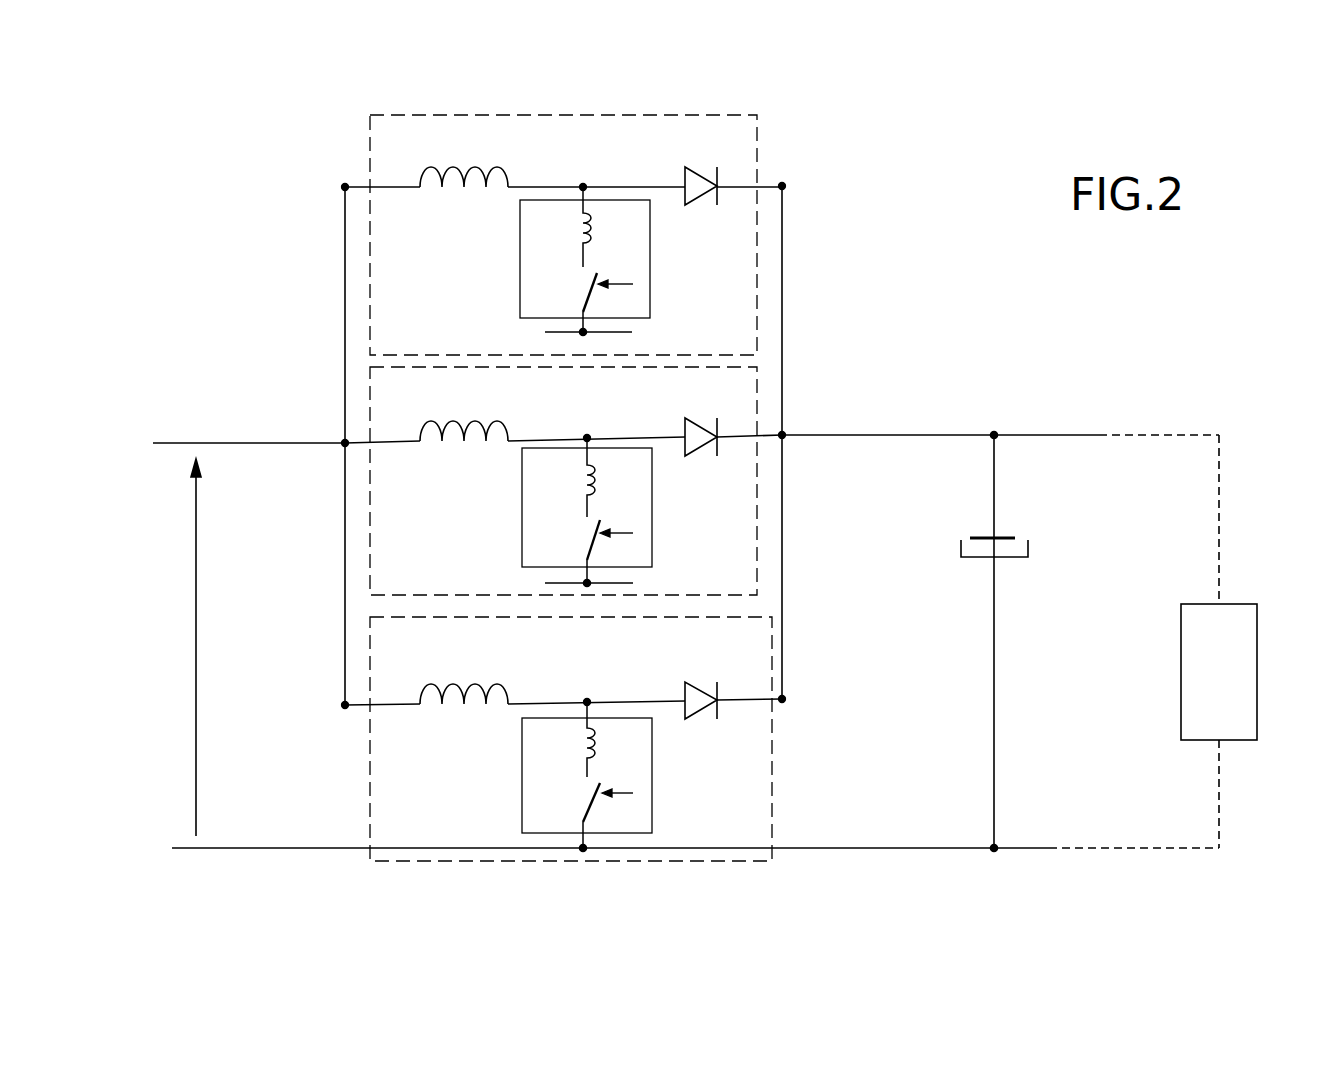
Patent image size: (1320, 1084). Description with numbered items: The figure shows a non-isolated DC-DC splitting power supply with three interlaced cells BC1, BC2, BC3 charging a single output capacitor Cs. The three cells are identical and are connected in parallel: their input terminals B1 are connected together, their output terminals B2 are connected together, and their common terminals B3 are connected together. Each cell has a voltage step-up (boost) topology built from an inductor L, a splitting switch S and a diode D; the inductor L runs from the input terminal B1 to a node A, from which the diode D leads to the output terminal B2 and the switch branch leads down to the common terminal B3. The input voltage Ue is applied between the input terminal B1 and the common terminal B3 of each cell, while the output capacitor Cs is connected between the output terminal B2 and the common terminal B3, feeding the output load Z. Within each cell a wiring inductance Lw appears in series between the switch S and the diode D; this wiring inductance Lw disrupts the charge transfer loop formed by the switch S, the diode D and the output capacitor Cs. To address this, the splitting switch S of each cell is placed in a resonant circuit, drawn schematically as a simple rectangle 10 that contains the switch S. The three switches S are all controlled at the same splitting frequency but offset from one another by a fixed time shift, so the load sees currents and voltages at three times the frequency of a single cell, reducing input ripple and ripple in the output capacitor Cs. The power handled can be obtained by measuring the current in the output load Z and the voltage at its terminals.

The third cell BC3 is at (370, 115).
The second cell BC2 is at (370, 375).
The first cell BC1 is at (370, 860).
The inductor L is at (469, 168).
The input terminal B1 is at (377, 432).
The node A is at (583, 185).
The diode D is at (685, 174).
The output terminal B2 is at (754, 425).
The resonant circuit 10 is at (520, 268).
The wiring inductance Lw is at (570, 482).
The splitting switch S is at (590, 547).
The common terminal B3 is at (580, 846).
The output capacitor Cs is at (1013, 642).
The output load Z is at (1219, 672).
The input voltage Ue is at (177, 647).